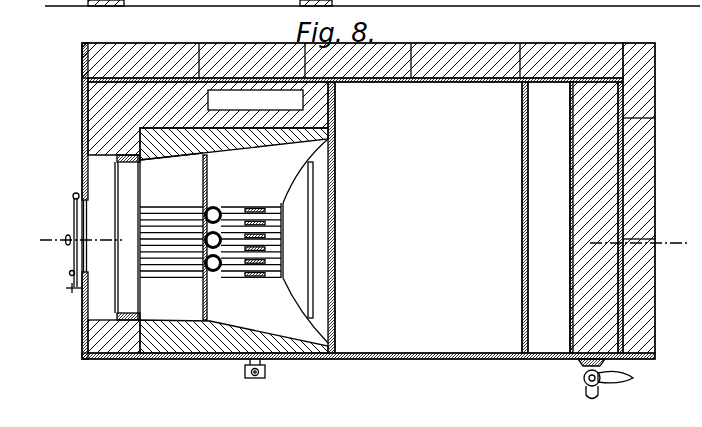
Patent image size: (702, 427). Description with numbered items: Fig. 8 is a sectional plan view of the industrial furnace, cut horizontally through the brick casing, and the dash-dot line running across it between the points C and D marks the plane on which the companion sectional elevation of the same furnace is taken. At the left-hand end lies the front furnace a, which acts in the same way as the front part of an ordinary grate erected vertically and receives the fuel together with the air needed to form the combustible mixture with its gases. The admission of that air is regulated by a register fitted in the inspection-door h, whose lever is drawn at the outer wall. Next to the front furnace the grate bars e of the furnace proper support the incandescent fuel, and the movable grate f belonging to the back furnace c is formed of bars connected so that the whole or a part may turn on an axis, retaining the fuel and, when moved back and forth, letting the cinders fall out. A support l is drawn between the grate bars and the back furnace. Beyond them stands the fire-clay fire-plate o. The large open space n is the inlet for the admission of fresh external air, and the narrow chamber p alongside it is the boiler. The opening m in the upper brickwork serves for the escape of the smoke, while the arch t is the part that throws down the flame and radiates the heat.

The smoke-escape opening m is at (208, 118).
The fresh-air inlet n is at (428, 217).
The boiler p is at (578, 134).
The fire-clay fire-plate o is at (305, 241).
The partition bar l is at (210, 237).
The front furnace a is at (171, 179).
The back furnace c is at (252, 232).
The grate bars e is at (171, 242).
The movable grate f is at (245, 258).
The inspection-door h is at (75, 199).
The arch t is at (261, 369).
The section line point C is at (81, 230).
The section line point D is at (640, 236).